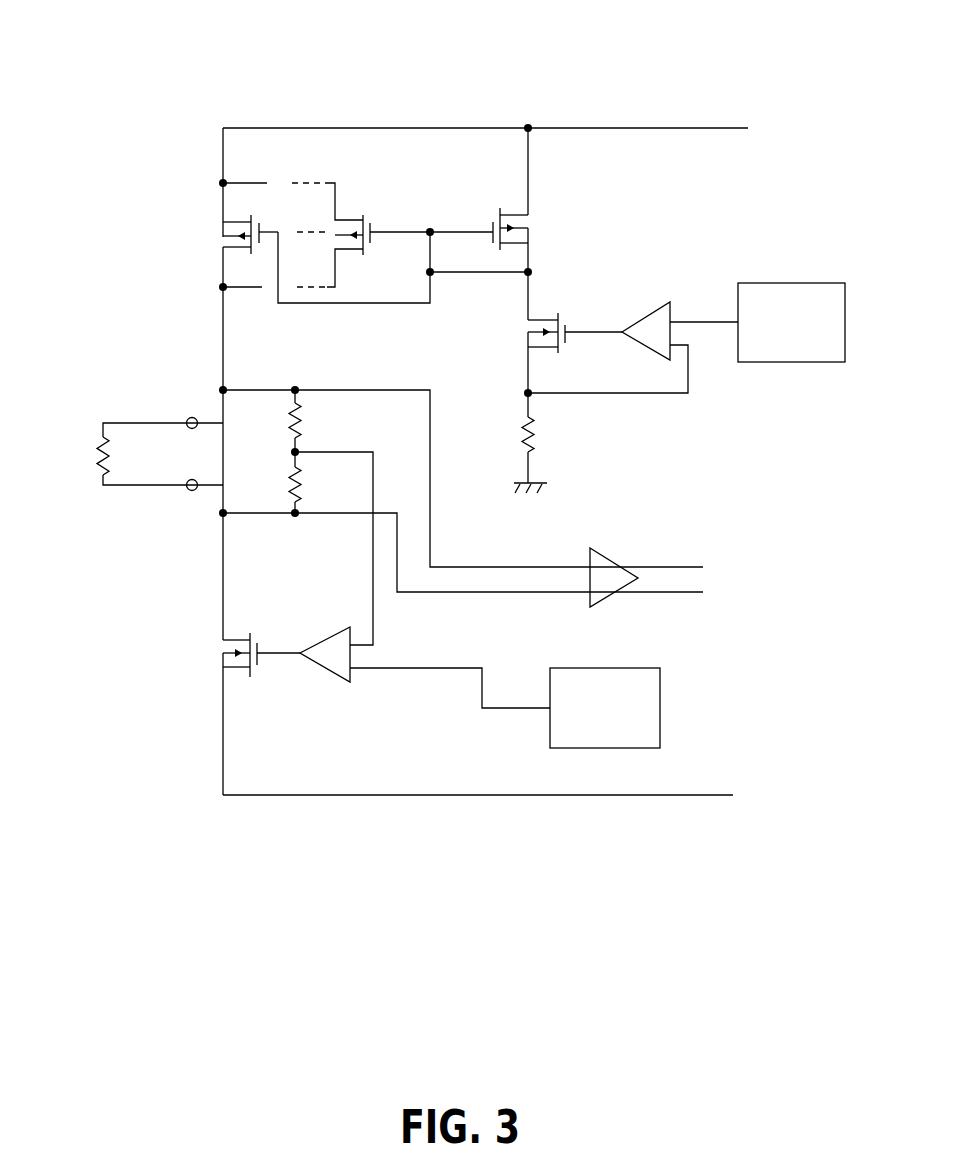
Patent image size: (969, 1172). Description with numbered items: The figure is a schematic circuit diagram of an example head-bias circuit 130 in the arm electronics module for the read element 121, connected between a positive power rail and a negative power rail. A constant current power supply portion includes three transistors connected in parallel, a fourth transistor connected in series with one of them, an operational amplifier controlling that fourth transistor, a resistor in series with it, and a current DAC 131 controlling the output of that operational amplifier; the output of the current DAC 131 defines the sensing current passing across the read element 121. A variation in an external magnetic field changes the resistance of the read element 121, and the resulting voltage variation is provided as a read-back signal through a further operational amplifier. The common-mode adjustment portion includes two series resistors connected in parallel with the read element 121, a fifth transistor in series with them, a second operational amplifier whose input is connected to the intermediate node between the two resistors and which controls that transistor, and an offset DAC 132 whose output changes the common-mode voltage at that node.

The head-bias circuit 130 is at (310, 29).
The read element 121 is at (101, 442).
The current DAC 131 is at (833, 354).
The offset DAC 132 is at (653, 739).